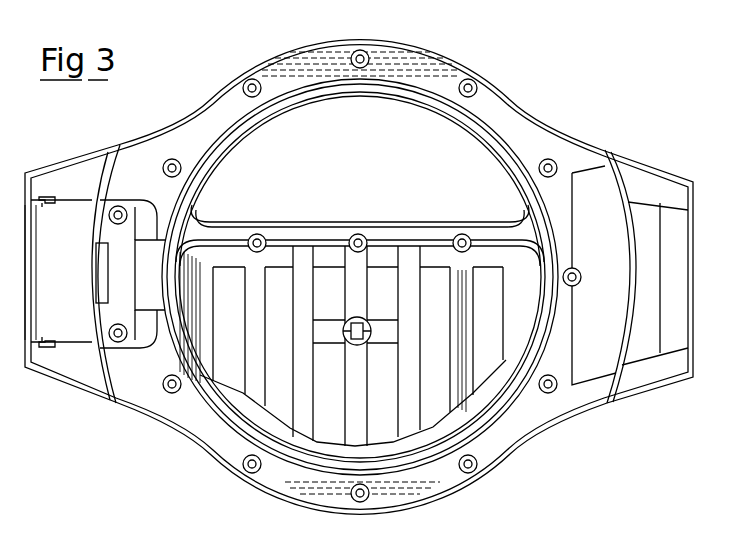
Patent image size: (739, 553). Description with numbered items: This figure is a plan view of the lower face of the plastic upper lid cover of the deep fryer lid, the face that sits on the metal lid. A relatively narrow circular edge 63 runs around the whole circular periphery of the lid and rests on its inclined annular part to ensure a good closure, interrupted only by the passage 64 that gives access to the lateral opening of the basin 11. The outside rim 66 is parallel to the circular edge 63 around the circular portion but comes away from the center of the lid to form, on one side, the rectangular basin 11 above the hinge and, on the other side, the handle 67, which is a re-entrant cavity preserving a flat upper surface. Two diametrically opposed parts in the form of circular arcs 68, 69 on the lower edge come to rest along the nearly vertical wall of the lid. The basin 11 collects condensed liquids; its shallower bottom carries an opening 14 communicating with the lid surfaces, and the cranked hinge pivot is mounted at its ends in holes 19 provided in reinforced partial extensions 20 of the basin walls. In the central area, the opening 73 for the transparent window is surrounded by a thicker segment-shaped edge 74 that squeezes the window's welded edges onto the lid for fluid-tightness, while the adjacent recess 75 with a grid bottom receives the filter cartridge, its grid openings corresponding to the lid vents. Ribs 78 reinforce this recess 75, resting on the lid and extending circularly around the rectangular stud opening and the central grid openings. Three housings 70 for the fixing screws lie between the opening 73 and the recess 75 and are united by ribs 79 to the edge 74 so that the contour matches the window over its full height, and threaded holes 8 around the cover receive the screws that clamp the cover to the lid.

The threaded hole 8 is at (581, 278).
The basin 11 is at (62, 302).
The opening 14 is at (95, 292).
The hole 19 is at (42, 204).
The partial extension 20 is at (49, 197).
The circular edge 63 is at (545, 186).
The passage 64 is at (132, 274).
The outside rim 66 is at (504, 98).
The handle 67 is at (612, 327).
The circular arc part 68 is at (613, 205).
The circular arc part 69 is at (108, 170).
The housing 70 is at (366, 52).
The opening 73 is at (368, 176).
The thicker edge 74 is at (512, 187).
The recess 75 is at (533, 300).
The rib 78 is at (367, 343).
The rib 79 is at (258, 234).